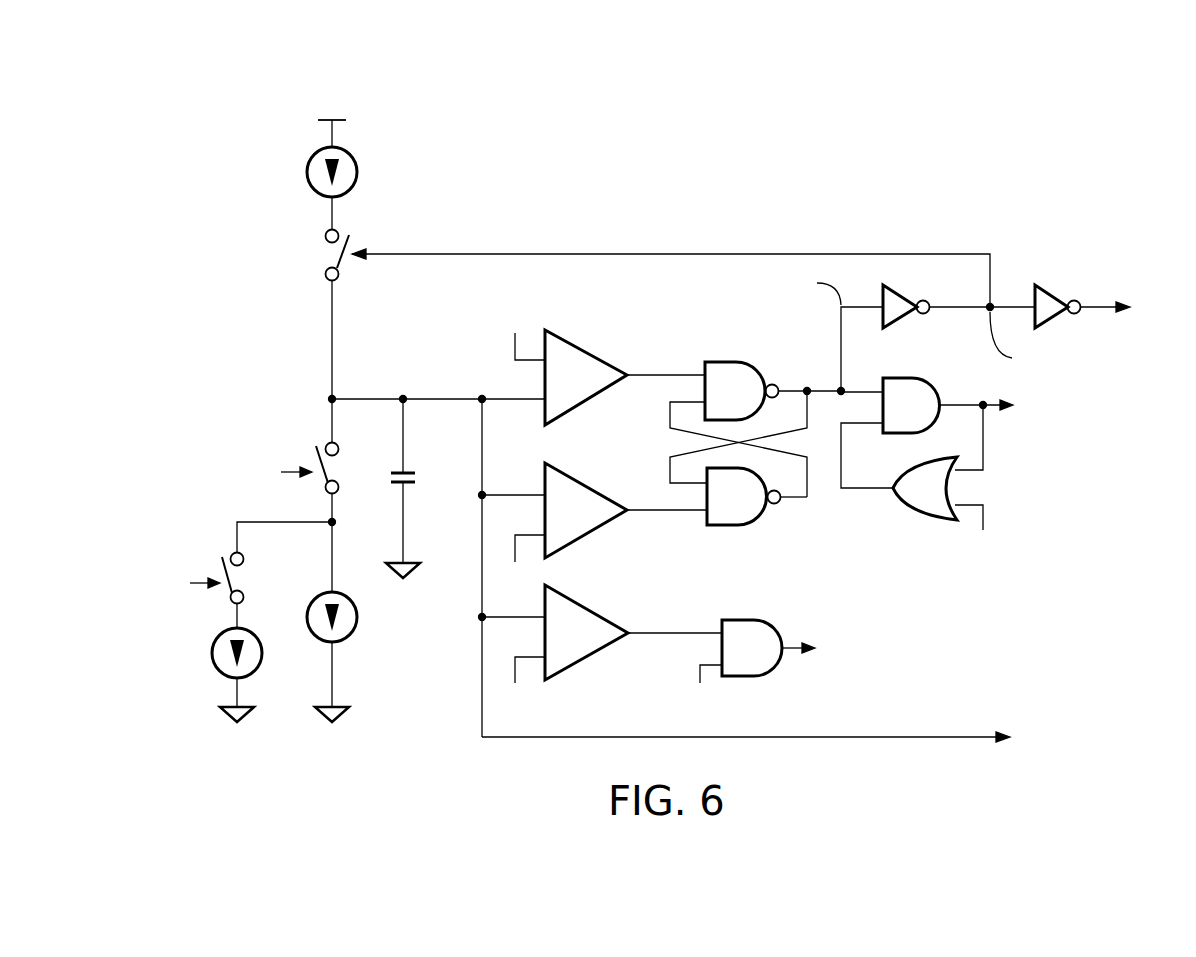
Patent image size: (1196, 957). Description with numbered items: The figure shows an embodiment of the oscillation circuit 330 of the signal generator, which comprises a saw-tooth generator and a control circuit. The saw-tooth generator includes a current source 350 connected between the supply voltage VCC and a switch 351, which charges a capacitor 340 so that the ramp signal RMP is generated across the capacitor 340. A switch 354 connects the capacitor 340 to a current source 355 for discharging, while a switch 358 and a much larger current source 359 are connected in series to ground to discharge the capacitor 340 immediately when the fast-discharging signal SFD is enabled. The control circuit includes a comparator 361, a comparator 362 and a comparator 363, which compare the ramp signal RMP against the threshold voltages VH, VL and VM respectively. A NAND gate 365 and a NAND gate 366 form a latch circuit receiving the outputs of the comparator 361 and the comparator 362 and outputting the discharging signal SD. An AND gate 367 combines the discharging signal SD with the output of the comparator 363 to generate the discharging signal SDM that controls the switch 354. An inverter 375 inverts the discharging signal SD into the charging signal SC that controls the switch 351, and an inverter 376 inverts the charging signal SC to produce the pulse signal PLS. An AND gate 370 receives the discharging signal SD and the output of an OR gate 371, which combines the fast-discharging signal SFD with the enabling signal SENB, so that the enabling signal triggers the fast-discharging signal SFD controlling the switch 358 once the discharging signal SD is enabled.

The oscillation circuit 330 is at (1107, 166).
The capacitor 340 is at (416, 475).
The current source 350 is at (392, 150).
The switch 351 is at (320, 256).
The switch 354 is at (322, 440).
The current source 355 is at (357, 615).
The switch 358 is at (232, 548).
The current source 359 is at (214, 655).
The comparator 361 is at (577, 340).
The comparator 362 is at (588, 535).
The comparator 363 is at (598, 610).
The NAND gate 365 is at (722, 360).
The NAND gate 366 is at (722, 527).
The AND gate 367 is at (748, 678).
The AND gate 370 is at (905, 376).
The OR gate 371 is at (920, 522).
The inverter 375 is at (898, 285).
The inverter 376 is at (1050, 285).